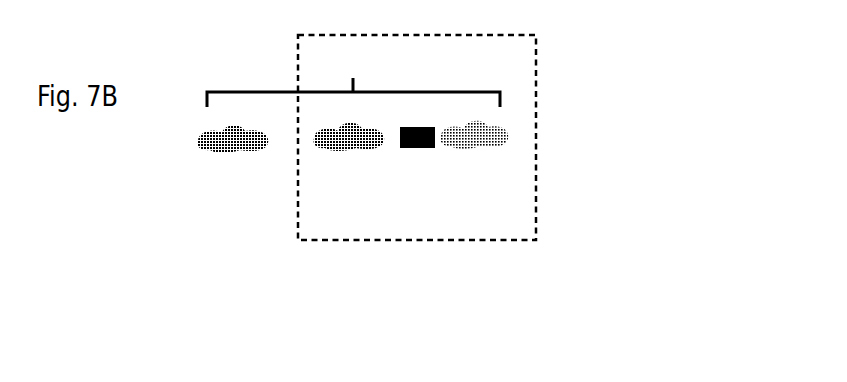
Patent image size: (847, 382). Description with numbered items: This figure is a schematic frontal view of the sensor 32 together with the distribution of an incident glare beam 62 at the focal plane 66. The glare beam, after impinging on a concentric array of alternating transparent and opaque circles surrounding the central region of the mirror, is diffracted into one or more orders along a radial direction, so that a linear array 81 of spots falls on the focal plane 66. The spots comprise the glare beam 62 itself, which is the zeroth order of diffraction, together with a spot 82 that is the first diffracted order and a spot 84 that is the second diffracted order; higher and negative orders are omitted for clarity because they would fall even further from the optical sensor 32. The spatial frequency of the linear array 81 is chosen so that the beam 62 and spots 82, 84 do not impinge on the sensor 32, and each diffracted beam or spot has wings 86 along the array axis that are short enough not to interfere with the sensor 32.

The sensor 32 is at (403, 130).
The linear array 81 is at (357, 73).
The spot 84 is at (233, 140).
The spot 82 is at (348, 140).
The glare beam 62 is at (475, 138).
The wings 86 is at (372, 139).
The focal plane 66 is at (536, 143).